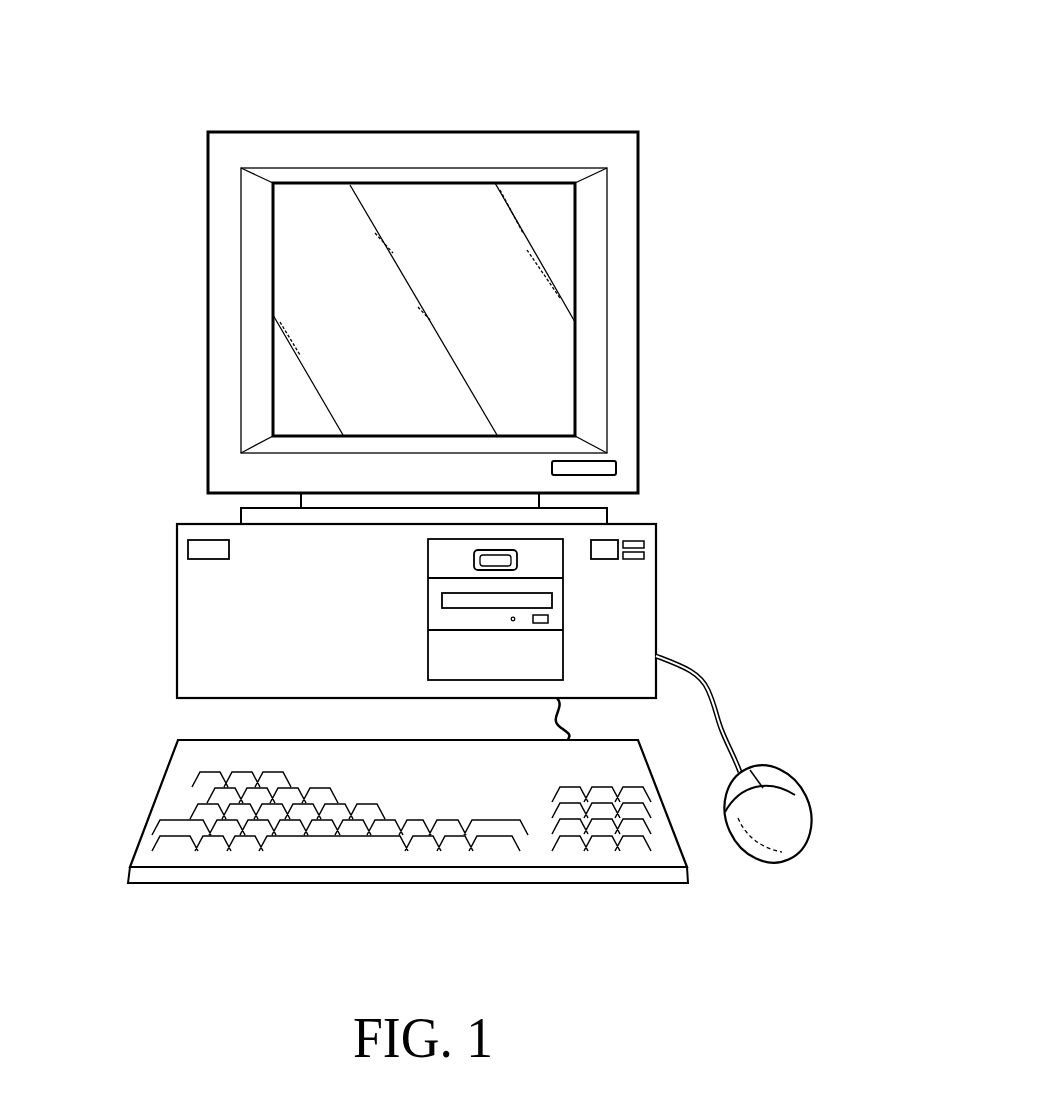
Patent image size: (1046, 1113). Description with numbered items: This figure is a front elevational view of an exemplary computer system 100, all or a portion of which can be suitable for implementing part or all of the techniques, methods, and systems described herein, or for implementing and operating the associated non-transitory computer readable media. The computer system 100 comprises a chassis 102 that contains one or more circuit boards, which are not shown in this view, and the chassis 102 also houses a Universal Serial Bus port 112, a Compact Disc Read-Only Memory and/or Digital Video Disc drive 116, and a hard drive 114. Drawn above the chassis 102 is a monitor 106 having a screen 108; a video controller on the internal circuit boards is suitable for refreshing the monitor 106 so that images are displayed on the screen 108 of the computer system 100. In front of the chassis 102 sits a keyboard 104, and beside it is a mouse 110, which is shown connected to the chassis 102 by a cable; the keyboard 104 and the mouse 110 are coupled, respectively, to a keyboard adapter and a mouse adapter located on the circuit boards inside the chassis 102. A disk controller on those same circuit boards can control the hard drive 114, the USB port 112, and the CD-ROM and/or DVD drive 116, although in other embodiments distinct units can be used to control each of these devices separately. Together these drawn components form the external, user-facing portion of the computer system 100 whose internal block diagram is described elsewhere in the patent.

The computer system 100 is at (630, 105).
The chassis 102 is at (177, 613).
The keyboard 104 is at (157, 798).
The monitor 106 is at (297, 132).
The screen 108 is at (328, 315).
The mouse 110 is at (788, 805).
The Universal Serial Bus (USB) port 112 is at (517, 555).
The hard drive 114 is at (552, 655).
The Compact Disc Read-Only Memory (CD-ROM) and/or Digital Video Disc (DVD) drive 116 is at (552, 608).